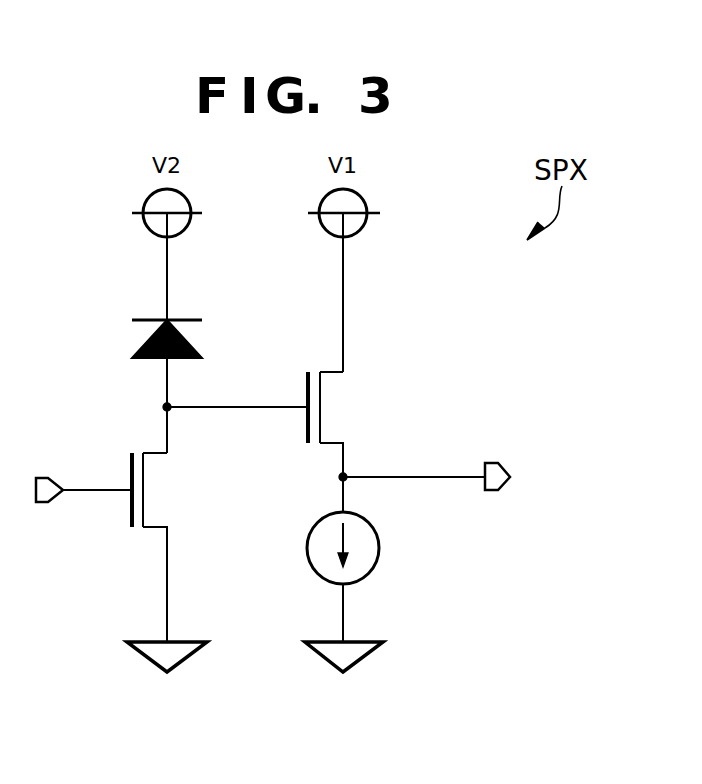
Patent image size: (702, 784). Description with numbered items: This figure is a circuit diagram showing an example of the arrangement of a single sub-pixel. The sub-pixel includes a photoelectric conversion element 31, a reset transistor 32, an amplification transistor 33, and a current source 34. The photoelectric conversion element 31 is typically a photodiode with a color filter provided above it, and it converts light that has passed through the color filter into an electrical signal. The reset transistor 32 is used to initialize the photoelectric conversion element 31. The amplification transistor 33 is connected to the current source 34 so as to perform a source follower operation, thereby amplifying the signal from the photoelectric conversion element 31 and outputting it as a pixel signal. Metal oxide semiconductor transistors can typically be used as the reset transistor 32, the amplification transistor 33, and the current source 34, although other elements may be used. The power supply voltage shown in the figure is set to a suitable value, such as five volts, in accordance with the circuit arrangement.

The photoelectric conversion element 31 is at (147, 340).
The reset transistor 32 is at (118, 525).
The amplification transistor 33 is at (357, 407).
The current source 34 is at (380, 548).